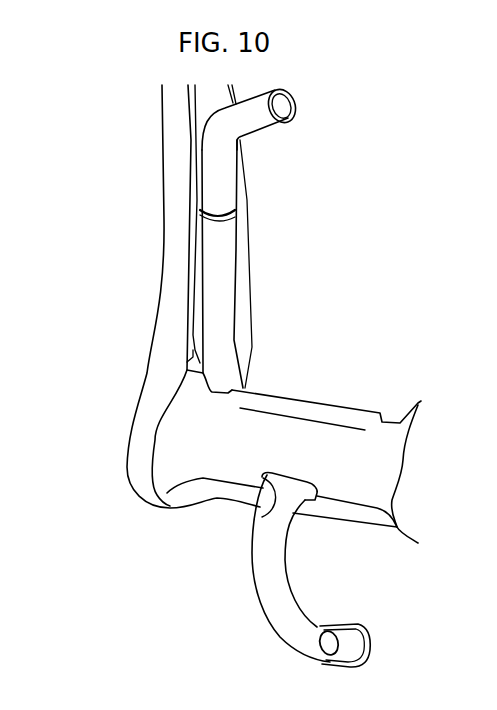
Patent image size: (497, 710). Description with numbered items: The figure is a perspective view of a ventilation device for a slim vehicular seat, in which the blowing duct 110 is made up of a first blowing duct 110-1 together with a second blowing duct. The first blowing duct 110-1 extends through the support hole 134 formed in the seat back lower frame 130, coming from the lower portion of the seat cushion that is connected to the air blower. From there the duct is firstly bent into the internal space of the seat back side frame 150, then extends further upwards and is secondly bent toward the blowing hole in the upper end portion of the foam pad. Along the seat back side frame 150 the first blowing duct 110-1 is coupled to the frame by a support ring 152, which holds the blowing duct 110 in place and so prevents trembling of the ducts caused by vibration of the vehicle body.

The seat back side frame 150 is at (177, 192).
The blowing duct 110 is at (234, 264).
The first blowing duct 110-1 is at (223, 200).
The support ring 152 is at (220, 222).
The seat back lower frame 130 is at (312, 384).
The support hole 134 is at (260, 517).